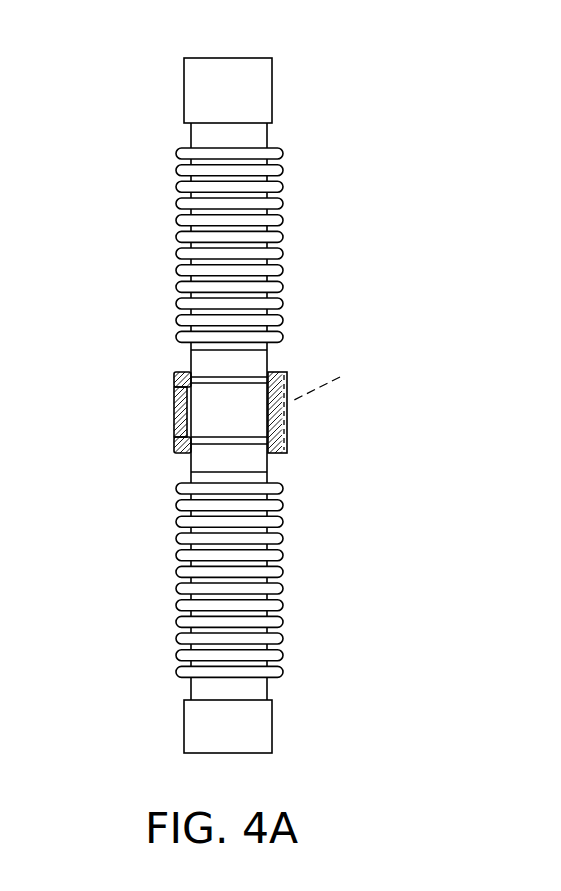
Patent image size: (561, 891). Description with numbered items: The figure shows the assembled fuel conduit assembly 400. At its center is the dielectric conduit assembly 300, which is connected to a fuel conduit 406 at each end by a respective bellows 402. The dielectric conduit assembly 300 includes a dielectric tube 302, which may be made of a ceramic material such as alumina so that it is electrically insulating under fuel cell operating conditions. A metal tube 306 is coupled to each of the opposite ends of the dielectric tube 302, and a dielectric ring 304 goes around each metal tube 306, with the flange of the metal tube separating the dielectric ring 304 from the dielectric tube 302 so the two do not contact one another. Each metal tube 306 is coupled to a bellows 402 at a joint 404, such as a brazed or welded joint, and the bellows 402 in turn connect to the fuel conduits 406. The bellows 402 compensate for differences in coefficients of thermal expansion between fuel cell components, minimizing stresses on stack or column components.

The fuel conduit assembly 400 is at (131, 101).
The fuel conduit 406 is at (244, 58).
The bellows 402 is at (178, 273).
The joint 404 is at (263, 367).
The metal tube 306 is at (260, 369).
The dielectric conduit assembly 300 is at (82, 350).
The dielectric tube 302 is at (178, 420).
The dielectric ring 304 is at (184, 379).